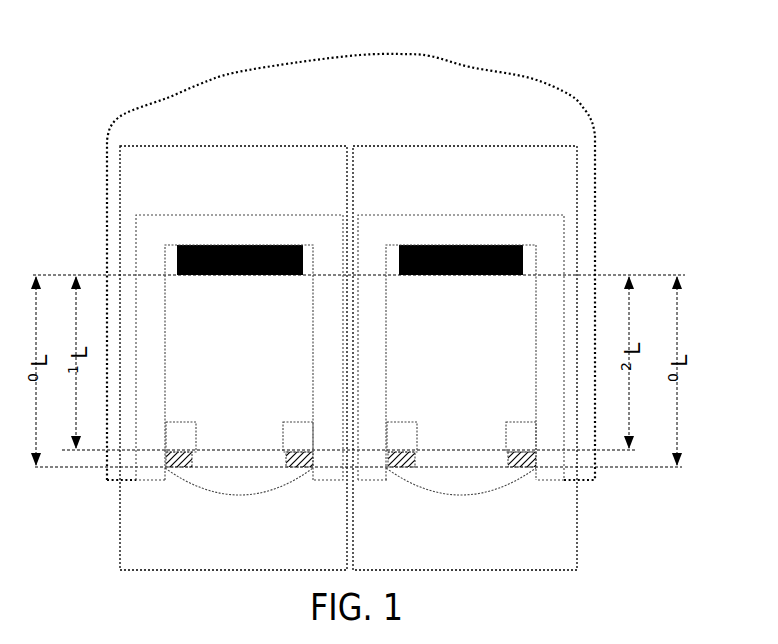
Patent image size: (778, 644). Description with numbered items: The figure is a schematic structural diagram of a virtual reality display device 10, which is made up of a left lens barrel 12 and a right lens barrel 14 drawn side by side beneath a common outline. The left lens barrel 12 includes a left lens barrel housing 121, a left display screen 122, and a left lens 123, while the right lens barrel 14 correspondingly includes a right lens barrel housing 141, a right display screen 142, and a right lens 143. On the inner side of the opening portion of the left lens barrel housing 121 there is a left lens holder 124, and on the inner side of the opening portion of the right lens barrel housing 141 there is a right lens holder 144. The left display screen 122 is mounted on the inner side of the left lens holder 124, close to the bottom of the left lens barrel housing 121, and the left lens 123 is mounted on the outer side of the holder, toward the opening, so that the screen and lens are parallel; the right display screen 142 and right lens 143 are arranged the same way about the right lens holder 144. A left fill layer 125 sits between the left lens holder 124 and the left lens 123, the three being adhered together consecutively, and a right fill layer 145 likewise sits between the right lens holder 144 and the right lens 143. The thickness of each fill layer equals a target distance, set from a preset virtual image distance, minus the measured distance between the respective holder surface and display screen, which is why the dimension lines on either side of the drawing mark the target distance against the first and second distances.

The virtual reality display device 10 is at (493, 80).
The left lens barrel 12 is at (335, 558).
The right lens barrel 14 is at (565, 558).
The left lens barrel housing 121 is at (215, 228).
The left display screen 122 is at (263, 277).
The left lens 123 is at (238, 485).
The left lens holder 124 is at (173, 428).
The left fill layer 125 is at (287, 460).
The right lens barrel housing 141 is at (435, 228).
The right display screen 142 is at (483, 277).
The right lens 143 is at (458, 485).
The right lens holder 144 is at (393, 428).
The right fill layer 145 is at (508, 460).